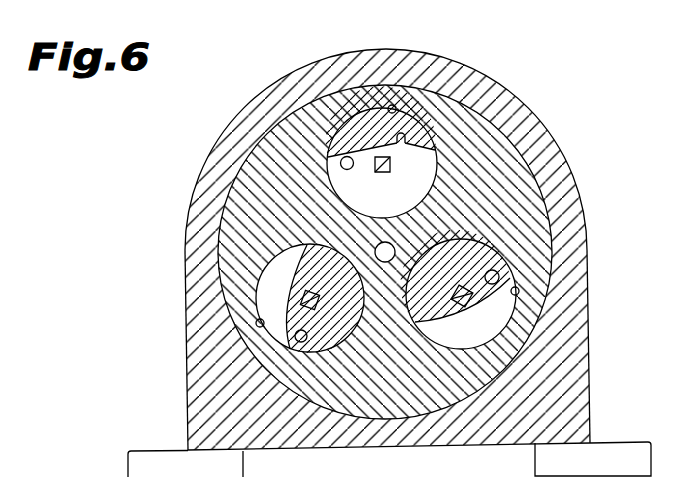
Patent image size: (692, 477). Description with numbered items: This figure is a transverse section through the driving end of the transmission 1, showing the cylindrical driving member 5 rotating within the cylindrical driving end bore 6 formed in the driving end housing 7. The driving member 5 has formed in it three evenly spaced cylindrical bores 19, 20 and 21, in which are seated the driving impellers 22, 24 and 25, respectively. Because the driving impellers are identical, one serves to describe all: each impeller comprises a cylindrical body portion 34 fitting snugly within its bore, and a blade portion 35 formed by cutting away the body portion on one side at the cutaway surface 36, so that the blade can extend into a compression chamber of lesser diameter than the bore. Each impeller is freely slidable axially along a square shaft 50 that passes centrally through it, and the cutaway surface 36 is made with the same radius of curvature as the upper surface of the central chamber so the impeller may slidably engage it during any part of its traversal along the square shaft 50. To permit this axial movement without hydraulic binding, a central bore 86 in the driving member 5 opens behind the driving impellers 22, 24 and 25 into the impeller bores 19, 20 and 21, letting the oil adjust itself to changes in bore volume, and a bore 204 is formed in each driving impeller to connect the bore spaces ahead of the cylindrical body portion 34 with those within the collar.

The transmission 1 is at (186, 378).
The driving member 5 is at (248, 172).
The driving end bore 6 is at (313, 110).
The driving end housing 7 is at (527, 116).
The cylindrical bore 19 is at (396, 108).
The cylindrical bore 20 is at (517, 292).
The cylindrical bore 21 is at (256, 323).
The driving impeller 22 is at (412, 130).
The driving impeller 24 is at (506, 312).
The driving impeller 25 is at (263, 290).
The cylindrical body portion 34 is at (374, 138).
The blade portion 35 is at (421, 183).
The cutaway surface 36 is at (405, 137).
The square shaft 50 is at (376, 166).
The bore 204 is at (347, 170).
The central bore 86 is at (396, 258).